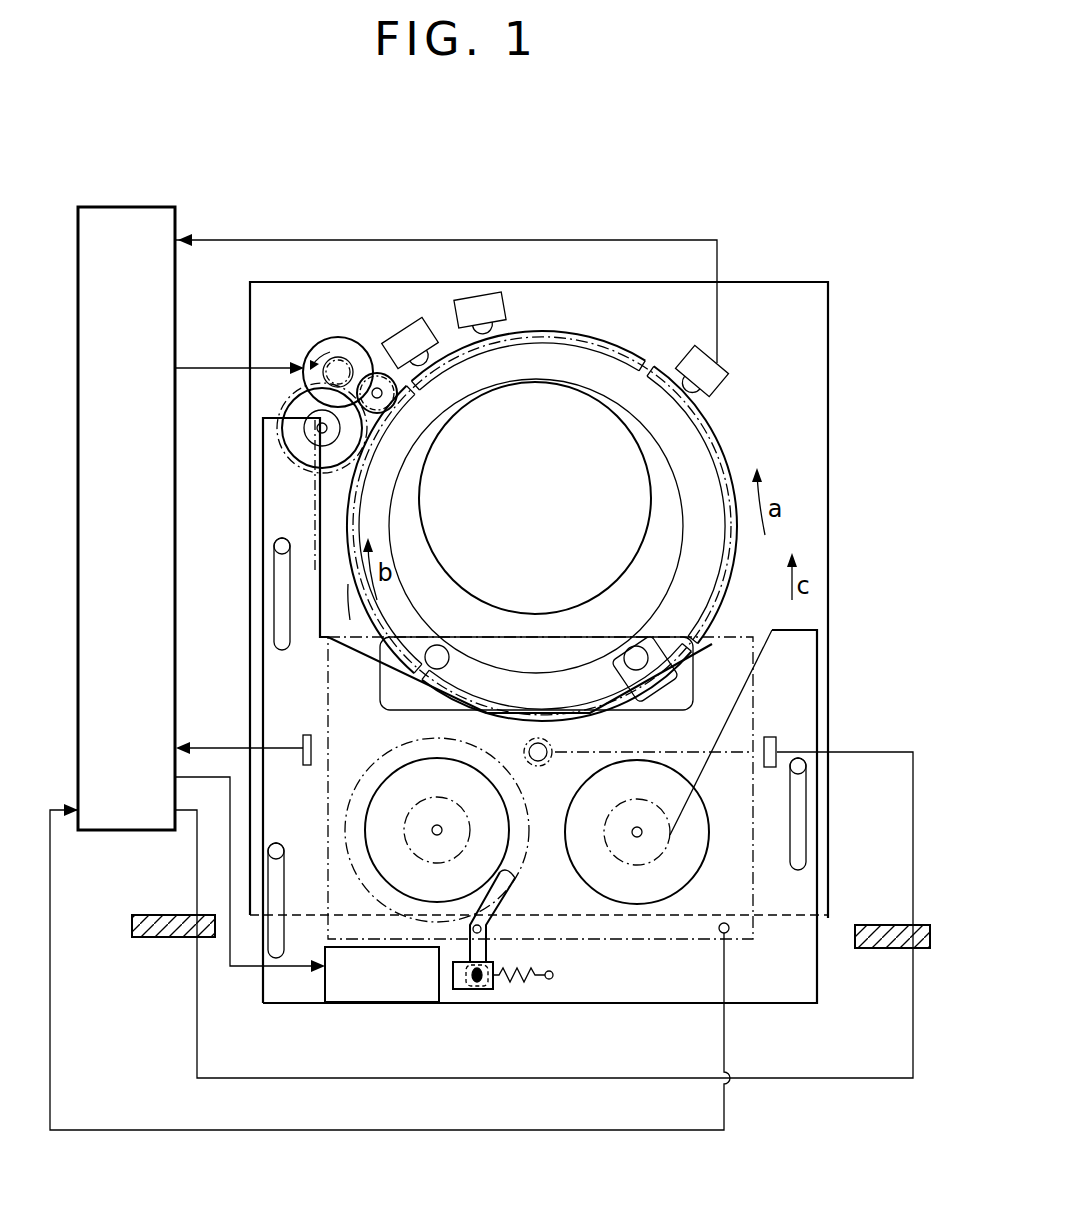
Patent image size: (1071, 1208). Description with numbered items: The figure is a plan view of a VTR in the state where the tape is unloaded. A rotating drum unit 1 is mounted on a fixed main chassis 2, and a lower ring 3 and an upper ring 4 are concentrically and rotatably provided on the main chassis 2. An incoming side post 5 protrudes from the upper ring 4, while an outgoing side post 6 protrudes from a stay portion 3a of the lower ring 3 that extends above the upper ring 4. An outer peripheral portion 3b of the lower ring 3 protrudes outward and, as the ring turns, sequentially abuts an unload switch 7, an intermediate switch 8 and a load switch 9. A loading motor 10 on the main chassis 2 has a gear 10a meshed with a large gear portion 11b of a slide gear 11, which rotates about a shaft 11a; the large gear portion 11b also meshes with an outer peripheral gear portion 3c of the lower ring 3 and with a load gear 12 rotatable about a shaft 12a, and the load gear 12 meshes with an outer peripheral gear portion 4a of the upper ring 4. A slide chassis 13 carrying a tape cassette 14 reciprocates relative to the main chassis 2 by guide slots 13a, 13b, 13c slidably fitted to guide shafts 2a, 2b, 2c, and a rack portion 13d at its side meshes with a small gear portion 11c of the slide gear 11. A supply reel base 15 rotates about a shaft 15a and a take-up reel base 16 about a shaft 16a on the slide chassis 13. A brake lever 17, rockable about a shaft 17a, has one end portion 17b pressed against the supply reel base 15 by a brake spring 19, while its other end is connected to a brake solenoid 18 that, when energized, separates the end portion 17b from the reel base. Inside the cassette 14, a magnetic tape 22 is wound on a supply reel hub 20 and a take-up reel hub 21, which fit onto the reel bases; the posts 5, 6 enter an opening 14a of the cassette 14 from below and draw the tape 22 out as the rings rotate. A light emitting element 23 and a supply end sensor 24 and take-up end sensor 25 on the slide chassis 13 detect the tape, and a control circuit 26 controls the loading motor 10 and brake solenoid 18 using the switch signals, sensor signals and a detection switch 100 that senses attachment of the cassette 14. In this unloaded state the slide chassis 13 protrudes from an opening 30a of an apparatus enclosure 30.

The rotating drum unit 1 is at (642, 473).
The main chassis 2 is at (788, 300).
The guide shaft 2a is at (280, 542).
The guide shaft 2b is at (276, 851).
The guide shaft 2c is at (803, 768).
The lower ring 3 is at (748, 548).
The stay portion 3a is at (753, 673).
The outer peripheral portion 3b is at (718, 428).
The outer peripheral gear portion 3c is at (592, 340).
The upper ring 4 is at (355, 498).
The outer peripheral gear portion 4a is at (348, 584).
The incoming side post 5 is at (437, 653).
The outgoing side post 6 is at (622, 650).
The unload switch 7 is at (720, 372).
The intermediate switch 8 is at (490, 295).
The load switch 9 is at (410, 320).
The loading motor 10 is at (325, 345).
The gear 10a is at (341, 360).
The slide gear 11 is at (310, 403).
The shaft 11a is at (345, 432).
The large gear portion 11b is at (288, 406).
The small gear portion 11c is at (352, 455).
The load gear 12 is at (376, 380).
The shaft 12a is at (395, 408).
The slide chassis 13 is at (752, 988).
The guide slot 13a is at (283, 628).
The guide slot 13b is at (280, 950).
The guide slot 13c is at (800, 840).
The rack portion 13d is at (318, 512).
The tape cassette 14 is at (745, 942).
The opening 14a is at (757, 698).
The supply reel base 15 is at (382, 890).
The shaft 15a is at (437, 830).
The take-up reel base 16 is at (632, 903).
The shaft 16a is at (643, 835).
The brake lever 17 is at (492, 928).
The shaft 17a is at (460, 962).
The one end portion 17b is at (512, 877).
The brake solenoid 18 is at (400, 990).
The brake spring 19 is at (520, 986).
The supply reel hub 20 is at (413, 805).
The take-up reel hub 21 is at (657, 807).
The magnetic tape 22 is at (567, 637).
The light emitting element 23 is at (548, 750).
The supply end sensor 24 is at (303, 745).
The take-up end sensor 25 is at (777, 752).
The control circuit 26 is at (140, 207).
The apparatus enclosure 30 is at (885, 950).
The opening 30a is at (842, 937).
The detection switch 100 is at (719, 934).